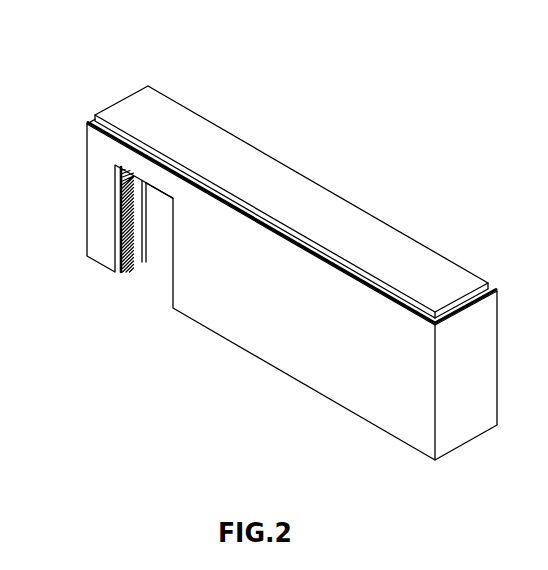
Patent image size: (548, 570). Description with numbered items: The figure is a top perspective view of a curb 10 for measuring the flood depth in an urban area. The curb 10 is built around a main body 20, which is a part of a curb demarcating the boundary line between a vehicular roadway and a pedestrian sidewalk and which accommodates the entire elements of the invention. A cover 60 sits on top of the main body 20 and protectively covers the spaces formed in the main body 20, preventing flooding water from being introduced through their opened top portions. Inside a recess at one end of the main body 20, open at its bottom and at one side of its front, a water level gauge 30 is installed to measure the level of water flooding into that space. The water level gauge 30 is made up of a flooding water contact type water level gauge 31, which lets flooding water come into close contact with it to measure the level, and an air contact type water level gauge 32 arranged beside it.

The curb 10 is at (33, 41).
The main body 20 is at (266, 367).
The cover 60 is at (308, 182).
The water level gauge 30 is at (100, 343).
The flooding water contact type water level gauge 31 is at (118, 249).
The air contact type water level gauge 32 is at (165, 250).